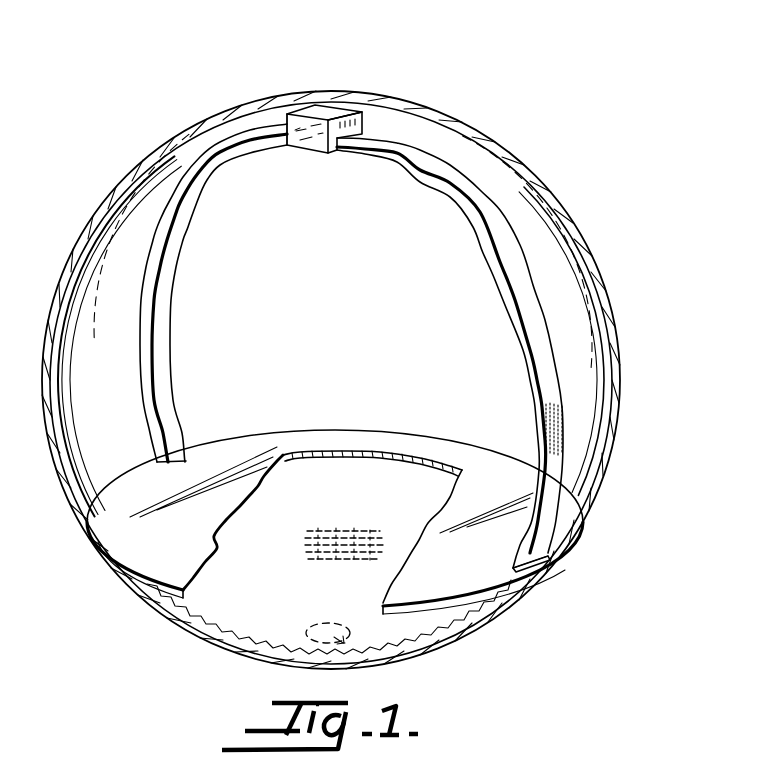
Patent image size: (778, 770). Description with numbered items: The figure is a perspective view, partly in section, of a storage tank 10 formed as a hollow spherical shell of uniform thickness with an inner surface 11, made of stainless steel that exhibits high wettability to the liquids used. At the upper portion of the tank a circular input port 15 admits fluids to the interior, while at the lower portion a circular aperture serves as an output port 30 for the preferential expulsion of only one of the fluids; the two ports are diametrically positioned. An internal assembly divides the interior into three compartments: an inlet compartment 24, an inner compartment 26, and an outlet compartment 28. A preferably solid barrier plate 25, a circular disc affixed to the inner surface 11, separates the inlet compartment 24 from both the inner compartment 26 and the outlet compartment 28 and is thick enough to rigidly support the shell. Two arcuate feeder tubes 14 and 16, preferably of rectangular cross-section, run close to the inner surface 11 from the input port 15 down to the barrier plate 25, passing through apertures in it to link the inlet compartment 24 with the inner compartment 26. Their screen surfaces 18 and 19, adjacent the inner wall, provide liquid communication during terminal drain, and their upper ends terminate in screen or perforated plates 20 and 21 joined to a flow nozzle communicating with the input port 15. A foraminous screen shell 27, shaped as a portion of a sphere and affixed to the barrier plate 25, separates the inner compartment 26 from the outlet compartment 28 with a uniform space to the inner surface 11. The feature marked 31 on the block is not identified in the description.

The storage tank 10 is at (372, 380).
The inner surface 11 is at (342, 380).
The feeder tube 14 is at (213, 293).
The input port 15 is at (383, 41).
The feeder tube 16 is at (450, 355).
The screen surface 18 is at (265, 94).
The screen surface 19 is at (544, 314).
The screen or perforated plate 20 is at (324, 98).
The screen or perforated plate 21 is at (383, 94).
The inlet compartment 24 is at (335, 456).
The barrier plate 25 is at (322, 527).
The inner compartment 26 is at (304, 637).
The screen shell 27 is at (329, 613).
The outlet compartment 28 is at (540, 599).
The output port 30 is at (373, 638).
The block front face marking 31 is at (290, 168).